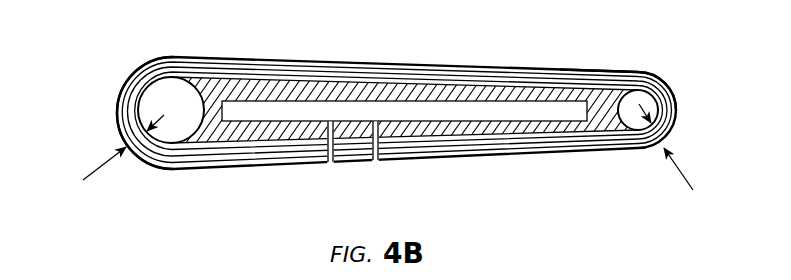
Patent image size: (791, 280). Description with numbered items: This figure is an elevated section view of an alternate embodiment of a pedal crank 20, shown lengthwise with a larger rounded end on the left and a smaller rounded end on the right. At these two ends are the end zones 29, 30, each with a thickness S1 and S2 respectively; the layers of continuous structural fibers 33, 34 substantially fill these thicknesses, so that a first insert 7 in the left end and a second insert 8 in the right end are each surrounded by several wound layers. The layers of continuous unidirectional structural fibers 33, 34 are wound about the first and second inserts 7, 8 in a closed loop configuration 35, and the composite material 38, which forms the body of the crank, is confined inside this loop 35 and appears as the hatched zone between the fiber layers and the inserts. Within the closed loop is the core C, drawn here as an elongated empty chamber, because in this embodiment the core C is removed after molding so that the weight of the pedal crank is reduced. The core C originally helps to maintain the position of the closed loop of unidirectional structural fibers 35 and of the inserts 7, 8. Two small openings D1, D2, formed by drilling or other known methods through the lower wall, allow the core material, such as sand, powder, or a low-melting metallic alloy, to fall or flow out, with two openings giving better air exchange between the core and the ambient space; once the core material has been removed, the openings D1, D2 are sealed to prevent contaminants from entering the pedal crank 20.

The pedal crank 20 is at (664, 73).
The end zone 29 is at (149, 60).
The end zone 30 is at (616, 60).
The layers of continuous structural fibers 33 is at (118, 110).
The layers of continuous structural fibers 34 is at (659, 109).
The loop 35 is at (327, 78).
The composite material 38 is at (402, 90).
The first insert 7 is at (172, 100).
The second insert 8 is at (632, 120).
The core C is at (436, 107).
The opening D1 is at (329, 166).
The opening D2 is at (379, 166).
The thickness S1 is at (97, 170).
The thickness S2 is at (683, 176).